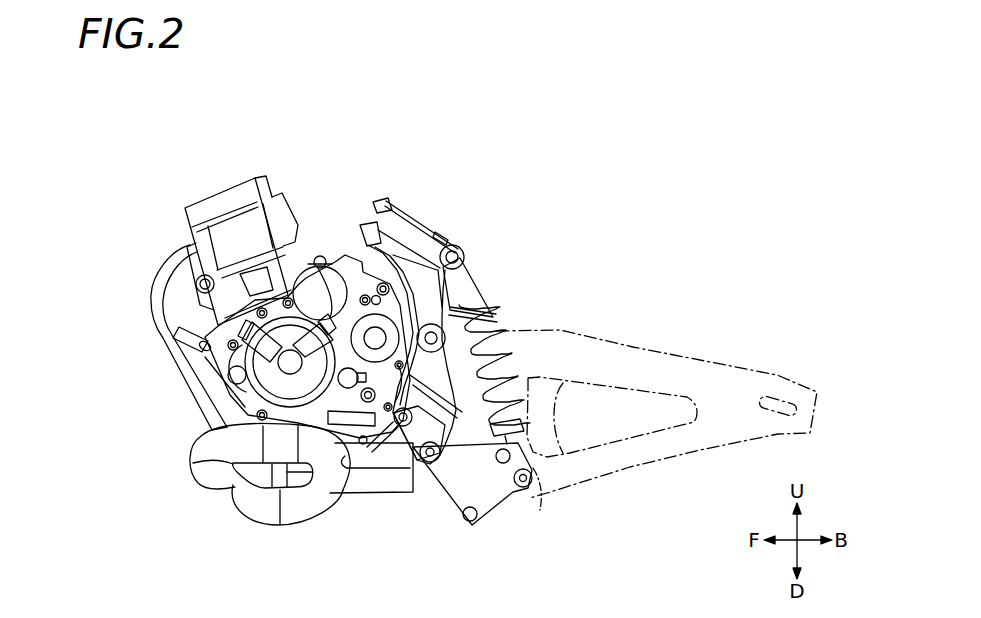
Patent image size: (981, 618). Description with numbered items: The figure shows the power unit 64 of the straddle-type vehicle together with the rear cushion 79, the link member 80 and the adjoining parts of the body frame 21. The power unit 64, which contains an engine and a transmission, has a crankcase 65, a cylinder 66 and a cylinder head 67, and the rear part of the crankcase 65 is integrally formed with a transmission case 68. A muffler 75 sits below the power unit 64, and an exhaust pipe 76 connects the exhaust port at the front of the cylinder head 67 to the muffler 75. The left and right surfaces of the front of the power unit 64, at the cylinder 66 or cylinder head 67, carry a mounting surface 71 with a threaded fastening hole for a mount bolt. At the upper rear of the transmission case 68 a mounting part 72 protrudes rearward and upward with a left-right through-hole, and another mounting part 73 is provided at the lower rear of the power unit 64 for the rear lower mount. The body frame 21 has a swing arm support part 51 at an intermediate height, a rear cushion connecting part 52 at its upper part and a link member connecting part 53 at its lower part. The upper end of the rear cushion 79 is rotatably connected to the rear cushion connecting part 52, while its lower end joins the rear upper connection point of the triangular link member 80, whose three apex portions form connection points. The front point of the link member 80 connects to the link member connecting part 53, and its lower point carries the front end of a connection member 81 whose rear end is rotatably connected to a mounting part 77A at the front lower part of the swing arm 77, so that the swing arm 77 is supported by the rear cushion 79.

The power unit 64 is at (255, 168).
The cylinder head 67 is at (228, 228).
The mounting surface 71 is at (197, 283).
The cylinder 66 is at (200, 302).
The transmission case 68 is at (320, 258).
The crankcase 65 is at (252, 400).
The mounting part 72 is at (378, 282).
The body frame 21 is at (431, 236).
The rear cushion connecting part 52 is at (462, 248).
The rear cushion 79 is at (480, 284).
The swing arm support part 51 is at (484, 322).
The mounting part 73 is at (382, 446).
The muffler 75 is at (356, 497).
The exhaust pipe 76 is at (258, 508).
The link member connecting part 53 is at (418, 462).
The link member 80 is at (460, 490).
The connection member 81 is at (505, 500).
The mounting part 77A is at (541, 494).
The swing arm 77 is at (645, 357).